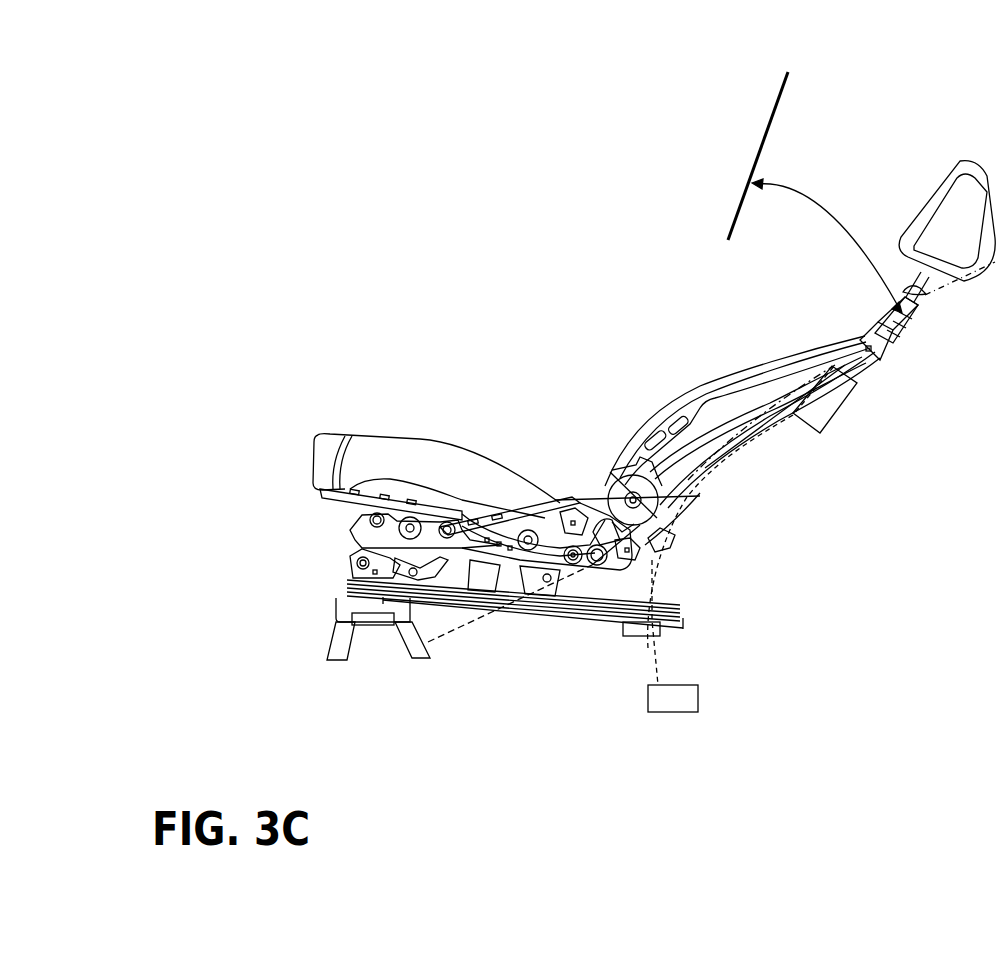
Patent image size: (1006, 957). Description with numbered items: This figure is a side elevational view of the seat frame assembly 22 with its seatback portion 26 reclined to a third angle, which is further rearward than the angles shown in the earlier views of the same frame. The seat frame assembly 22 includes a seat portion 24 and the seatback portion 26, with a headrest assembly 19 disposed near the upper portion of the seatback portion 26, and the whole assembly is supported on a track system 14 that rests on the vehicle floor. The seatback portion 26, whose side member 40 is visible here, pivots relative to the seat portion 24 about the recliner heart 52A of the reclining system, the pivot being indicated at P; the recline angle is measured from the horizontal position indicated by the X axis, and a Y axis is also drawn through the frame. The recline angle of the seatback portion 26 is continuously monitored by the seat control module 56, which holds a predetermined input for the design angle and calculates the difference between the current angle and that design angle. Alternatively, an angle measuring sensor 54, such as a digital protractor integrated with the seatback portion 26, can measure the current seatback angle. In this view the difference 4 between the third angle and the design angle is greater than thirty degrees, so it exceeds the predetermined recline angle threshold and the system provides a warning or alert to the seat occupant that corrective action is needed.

The difference 4 is at (827, 213).
The headrest assembly 19 is at (963, 187).
The seat frame assembly 22 is at (494, 331).
The seat portion 24 is at (398, 434).
The seatback portion 26 is at (666, 376).
The pivot P is at (624, 487).
The angle measuring sensor 54 is at (822, 408).
The second side member 40 is at (737, 443).
The X axis X is at (687, 503).
The recliner heart 52A is at (665, 523).
The track system 14 is at (328, 578).
The Y axis Y is at (453, 625).
The seat control module 56 is at (668, 712).